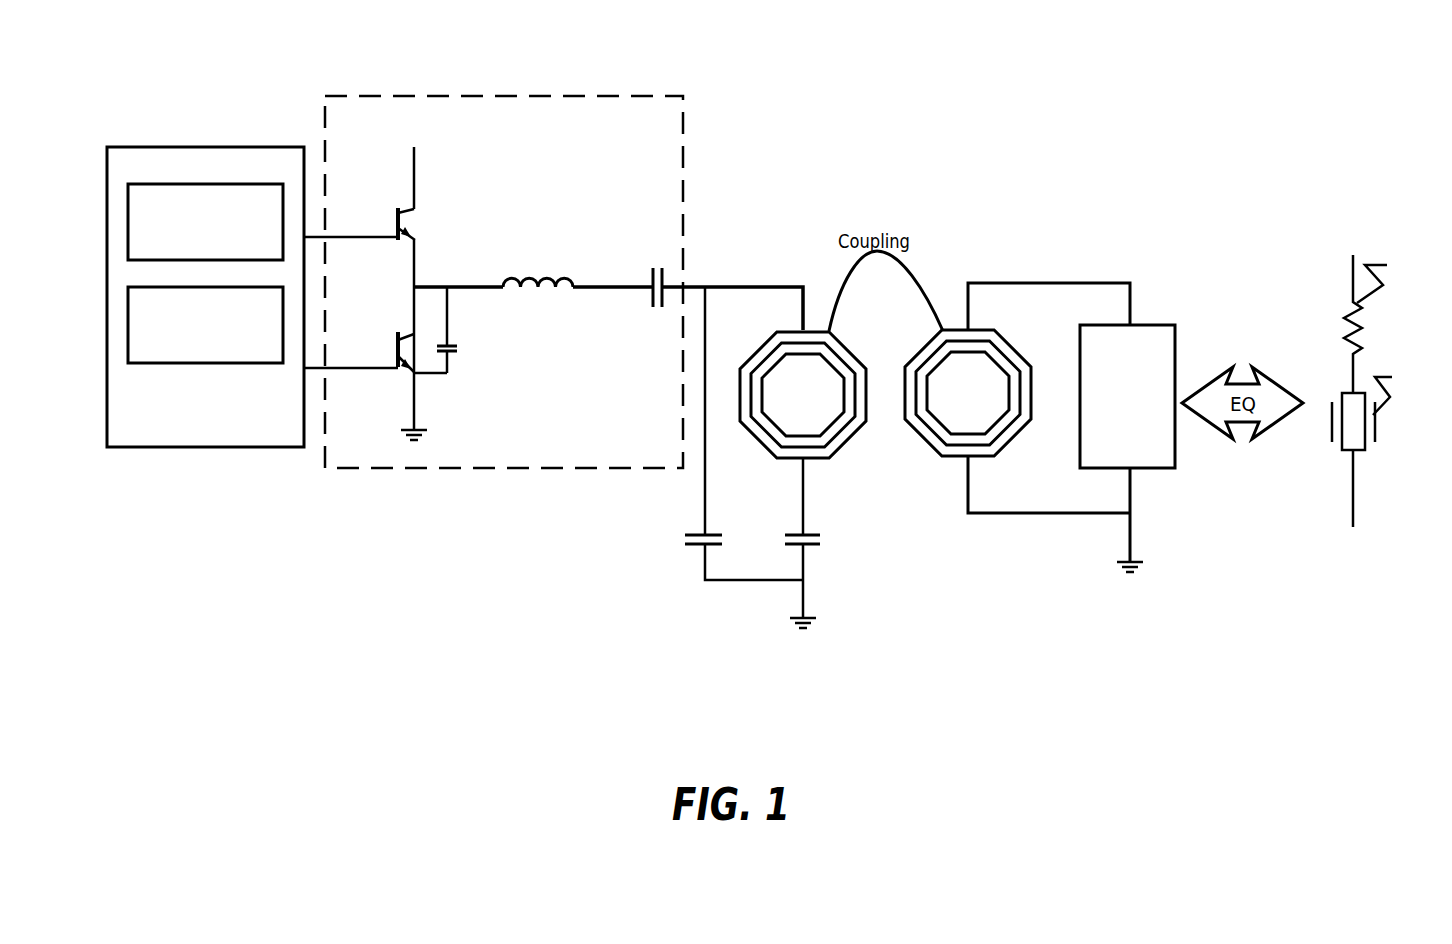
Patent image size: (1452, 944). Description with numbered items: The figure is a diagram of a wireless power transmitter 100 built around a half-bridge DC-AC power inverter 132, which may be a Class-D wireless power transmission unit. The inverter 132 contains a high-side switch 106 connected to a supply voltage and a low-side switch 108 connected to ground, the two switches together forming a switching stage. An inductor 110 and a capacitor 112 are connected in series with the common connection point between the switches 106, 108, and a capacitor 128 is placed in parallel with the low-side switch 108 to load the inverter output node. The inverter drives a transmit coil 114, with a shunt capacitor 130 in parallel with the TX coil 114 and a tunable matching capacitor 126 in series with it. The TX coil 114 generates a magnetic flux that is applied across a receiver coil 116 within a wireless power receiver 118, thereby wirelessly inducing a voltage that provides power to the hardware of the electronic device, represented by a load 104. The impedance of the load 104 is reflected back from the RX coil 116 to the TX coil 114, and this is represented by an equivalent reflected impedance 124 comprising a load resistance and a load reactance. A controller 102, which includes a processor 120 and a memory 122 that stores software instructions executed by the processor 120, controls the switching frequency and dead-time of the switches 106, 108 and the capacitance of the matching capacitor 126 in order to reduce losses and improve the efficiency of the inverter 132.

The wireless power transmitter 100 is at (170, 69).
The controller 102 is at (205, 297).
The load 104 is at (1127, 396).
The high-side switch 106 is at (376, 204).
The low-side switch 108 is at (375, 334).
The inductor 110 is at (524, 257).
The capacitor 112 is at (627, 272).
The transmit (TX) coil 114 is at (803, 433).
The receiver (RX) coil 116 is at (968, 393).
The wireless power receiver 118 is at (920, 183).
The processor 120 is at (205, 222).
The memory 122 is at (205, 325).
The equivalent reflected impedance 124 is at (1369, 357).
The tunable matching capacitor 126 is at (836, 516).
The capacitor 128 is at (483, 341).
The shunt capacitor 130 is at (679, 523).
The half-bridge DC-AC power inverter 132 is at (564, 257).